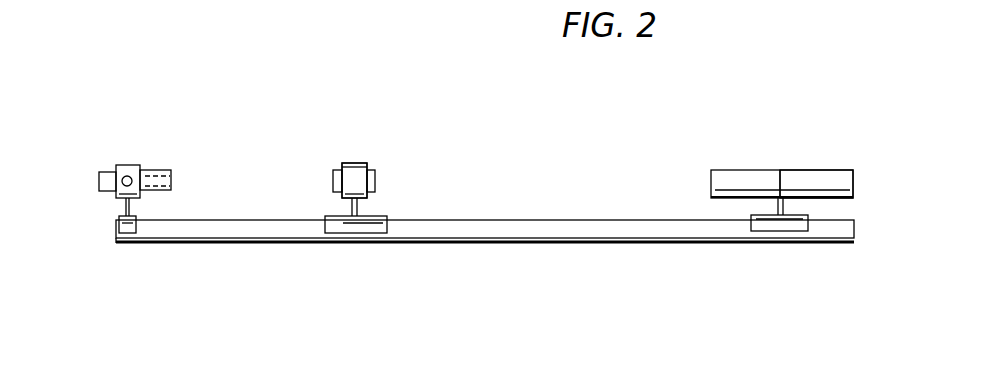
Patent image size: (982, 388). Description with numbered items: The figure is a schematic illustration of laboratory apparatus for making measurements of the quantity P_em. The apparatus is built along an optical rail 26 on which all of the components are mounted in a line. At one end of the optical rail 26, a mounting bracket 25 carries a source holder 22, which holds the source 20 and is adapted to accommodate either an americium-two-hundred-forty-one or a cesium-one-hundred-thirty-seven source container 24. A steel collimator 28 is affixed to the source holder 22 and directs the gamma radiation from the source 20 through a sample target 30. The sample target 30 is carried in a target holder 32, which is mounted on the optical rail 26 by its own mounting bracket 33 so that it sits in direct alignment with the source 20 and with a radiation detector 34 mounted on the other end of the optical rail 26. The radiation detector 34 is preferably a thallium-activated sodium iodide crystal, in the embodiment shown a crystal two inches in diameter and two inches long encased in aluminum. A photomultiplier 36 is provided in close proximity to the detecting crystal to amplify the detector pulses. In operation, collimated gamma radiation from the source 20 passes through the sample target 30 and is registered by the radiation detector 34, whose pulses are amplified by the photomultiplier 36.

The source 20 is at (131, 176).
The source holder 22 is at (126, 164).
The source container 24 is at (108, 173).
The mounting bracket 25 is at (121, 209).
The optical rail 26 is at (552, 220).
The steel collimator 28 is at (172, 180).
The sample target 30 is at (376, 175).
The target holder 32 is at (355, 163).
The mounting bracket 33 is at (367, 208).
The radiation detector 34 is at (745, 170).
The photomultiplier 36 is at (825, 170).